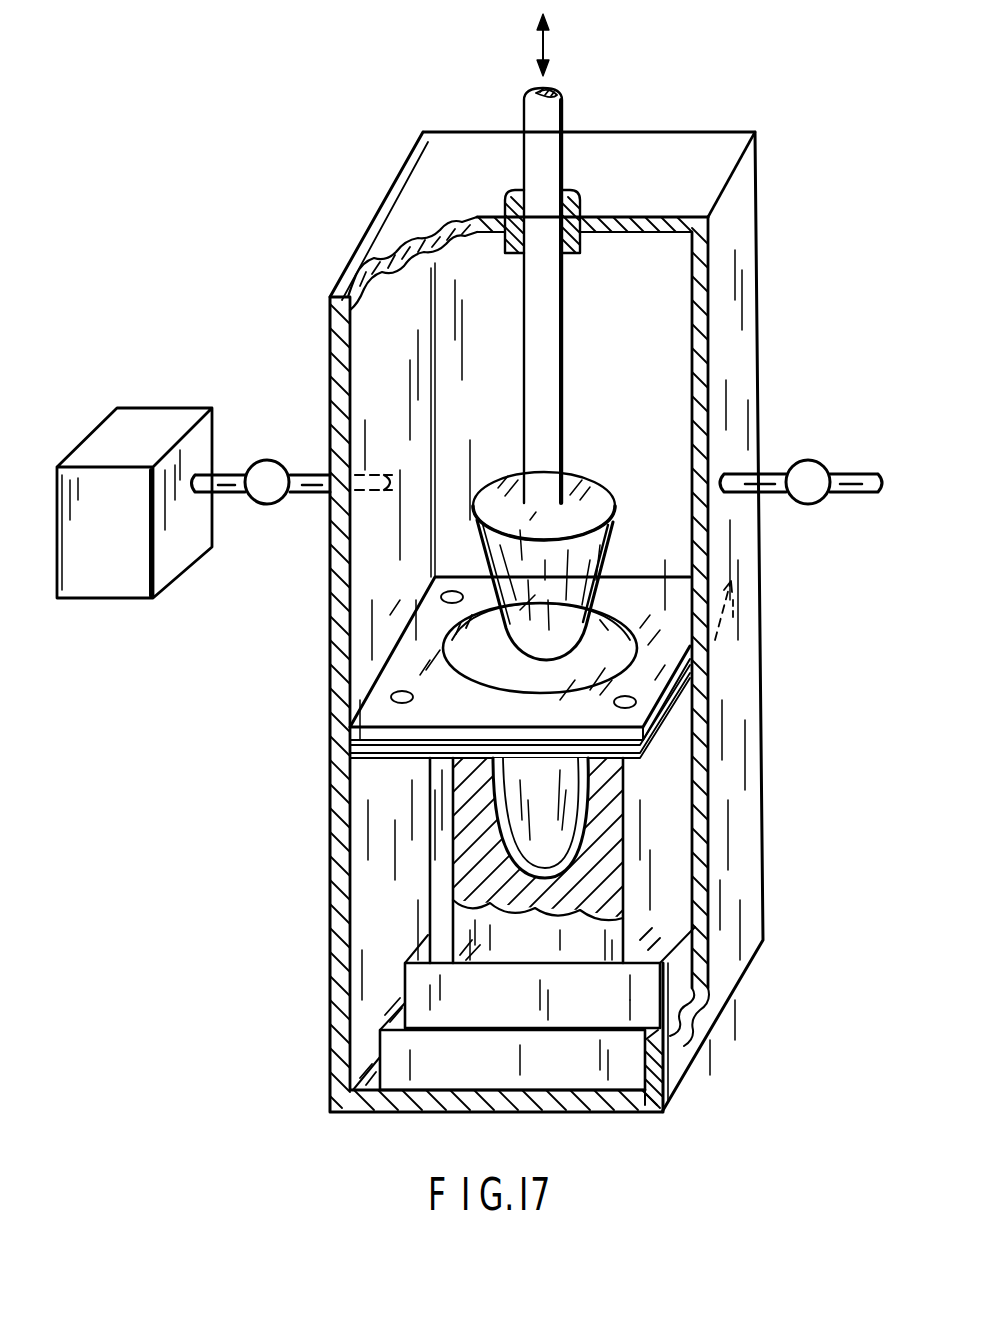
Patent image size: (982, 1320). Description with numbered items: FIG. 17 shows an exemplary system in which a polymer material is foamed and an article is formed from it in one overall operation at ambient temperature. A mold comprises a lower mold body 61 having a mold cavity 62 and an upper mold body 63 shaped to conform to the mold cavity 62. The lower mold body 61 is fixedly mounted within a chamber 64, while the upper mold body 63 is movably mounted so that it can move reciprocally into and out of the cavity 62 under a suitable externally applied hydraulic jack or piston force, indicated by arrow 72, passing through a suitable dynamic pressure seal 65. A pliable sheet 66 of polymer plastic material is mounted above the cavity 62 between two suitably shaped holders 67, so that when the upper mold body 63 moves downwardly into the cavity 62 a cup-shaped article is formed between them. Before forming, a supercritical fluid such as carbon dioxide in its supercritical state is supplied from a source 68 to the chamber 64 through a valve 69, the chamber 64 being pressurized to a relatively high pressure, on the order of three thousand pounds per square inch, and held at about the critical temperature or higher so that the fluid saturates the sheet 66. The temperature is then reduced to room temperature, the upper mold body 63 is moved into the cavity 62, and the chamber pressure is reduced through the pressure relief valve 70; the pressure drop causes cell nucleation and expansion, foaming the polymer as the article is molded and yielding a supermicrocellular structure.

The lower mold body 61 is at (472, 857).
The mold cavity 62 is at (525, 800).
The upper mold body 63 is at (604, 536).
The chamber 64 is at (758, 736).
The dynamic pressure seal 65 is at (582, 252).
The pliable sheet 66 is at (483, 668).
The holders 67 is at (651, 592).
The source 68 is at (153, 600).
The valve 69 is at (270, 460).
The pressure relief valve 70 is at (822, 462).
The arrow 72 is at (547, 48).